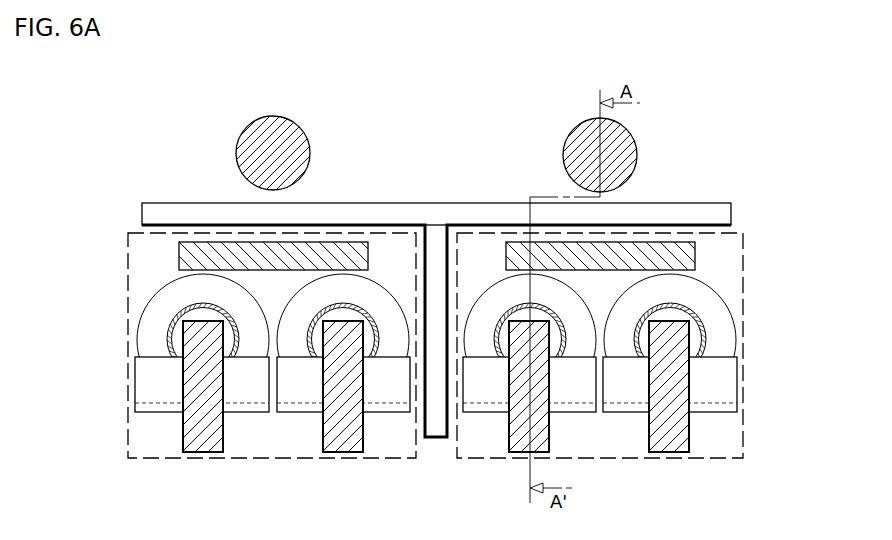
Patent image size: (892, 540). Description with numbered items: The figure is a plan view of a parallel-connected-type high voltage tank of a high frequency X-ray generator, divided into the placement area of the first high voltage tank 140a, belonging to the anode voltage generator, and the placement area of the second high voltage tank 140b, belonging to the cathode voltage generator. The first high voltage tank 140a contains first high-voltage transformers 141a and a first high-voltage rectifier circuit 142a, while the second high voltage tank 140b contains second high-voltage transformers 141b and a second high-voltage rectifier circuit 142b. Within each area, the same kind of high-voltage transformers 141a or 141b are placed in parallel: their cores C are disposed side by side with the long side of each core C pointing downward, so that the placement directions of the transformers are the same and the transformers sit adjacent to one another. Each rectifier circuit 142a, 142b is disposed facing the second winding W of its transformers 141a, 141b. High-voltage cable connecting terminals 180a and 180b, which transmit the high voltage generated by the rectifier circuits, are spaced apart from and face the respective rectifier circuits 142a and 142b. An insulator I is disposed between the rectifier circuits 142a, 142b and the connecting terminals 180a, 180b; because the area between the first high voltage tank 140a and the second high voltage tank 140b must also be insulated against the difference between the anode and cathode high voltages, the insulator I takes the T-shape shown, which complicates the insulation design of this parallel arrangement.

The insulator I is at (683, 206).
The high-voltage cable connecting terminal 180a is at (253, 140).
The high-voltage cable connecting terminal 180b is at (618, 138).
The first high voltage tank 140a is at (135, 233).
The second high voltage tank 140b is at (738, 233).
The first high-voltage rectifier circuit 142a is at (178, 250).
The second high-voltage rectifier circuit 142b is at (695, 258).
The first high-voltage transformer 141a is at (90, 325).
The second high-voltage transformer 141b is at (782, 325).
The second winding W is at (150, 330).
The core C is at (187, 430).